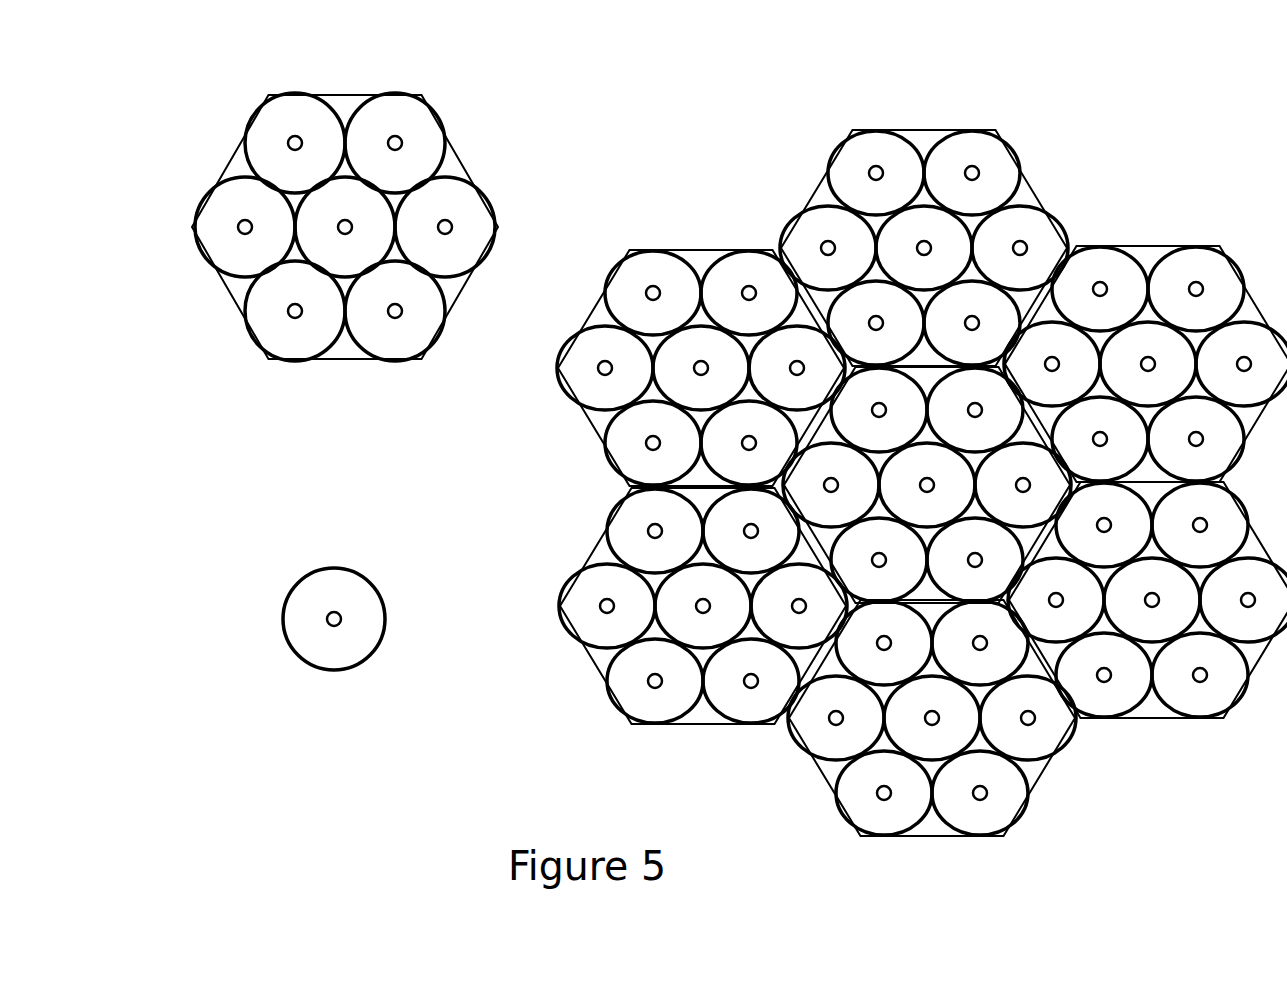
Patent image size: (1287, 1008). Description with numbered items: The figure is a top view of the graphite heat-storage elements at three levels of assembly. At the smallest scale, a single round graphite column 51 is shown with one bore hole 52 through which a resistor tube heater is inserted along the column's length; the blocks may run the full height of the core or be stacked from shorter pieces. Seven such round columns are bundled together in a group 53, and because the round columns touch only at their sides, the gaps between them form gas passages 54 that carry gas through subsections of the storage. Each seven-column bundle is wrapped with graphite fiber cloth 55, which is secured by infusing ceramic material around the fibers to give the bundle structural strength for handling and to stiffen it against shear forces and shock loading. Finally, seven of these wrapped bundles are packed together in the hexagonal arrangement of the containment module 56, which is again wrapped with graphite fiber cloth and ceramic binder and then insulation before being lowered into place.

The round graphite column 51 is at (285, 578).
The bore hole 52 is at (327, 620).
The bundle of seven graphite columns 53 is at (309, 199).
The gas passages 54 is at (293, 252).
The graphite fiber cloth 55 is at (225, 293).
The containment module 56 is at (780, 177).